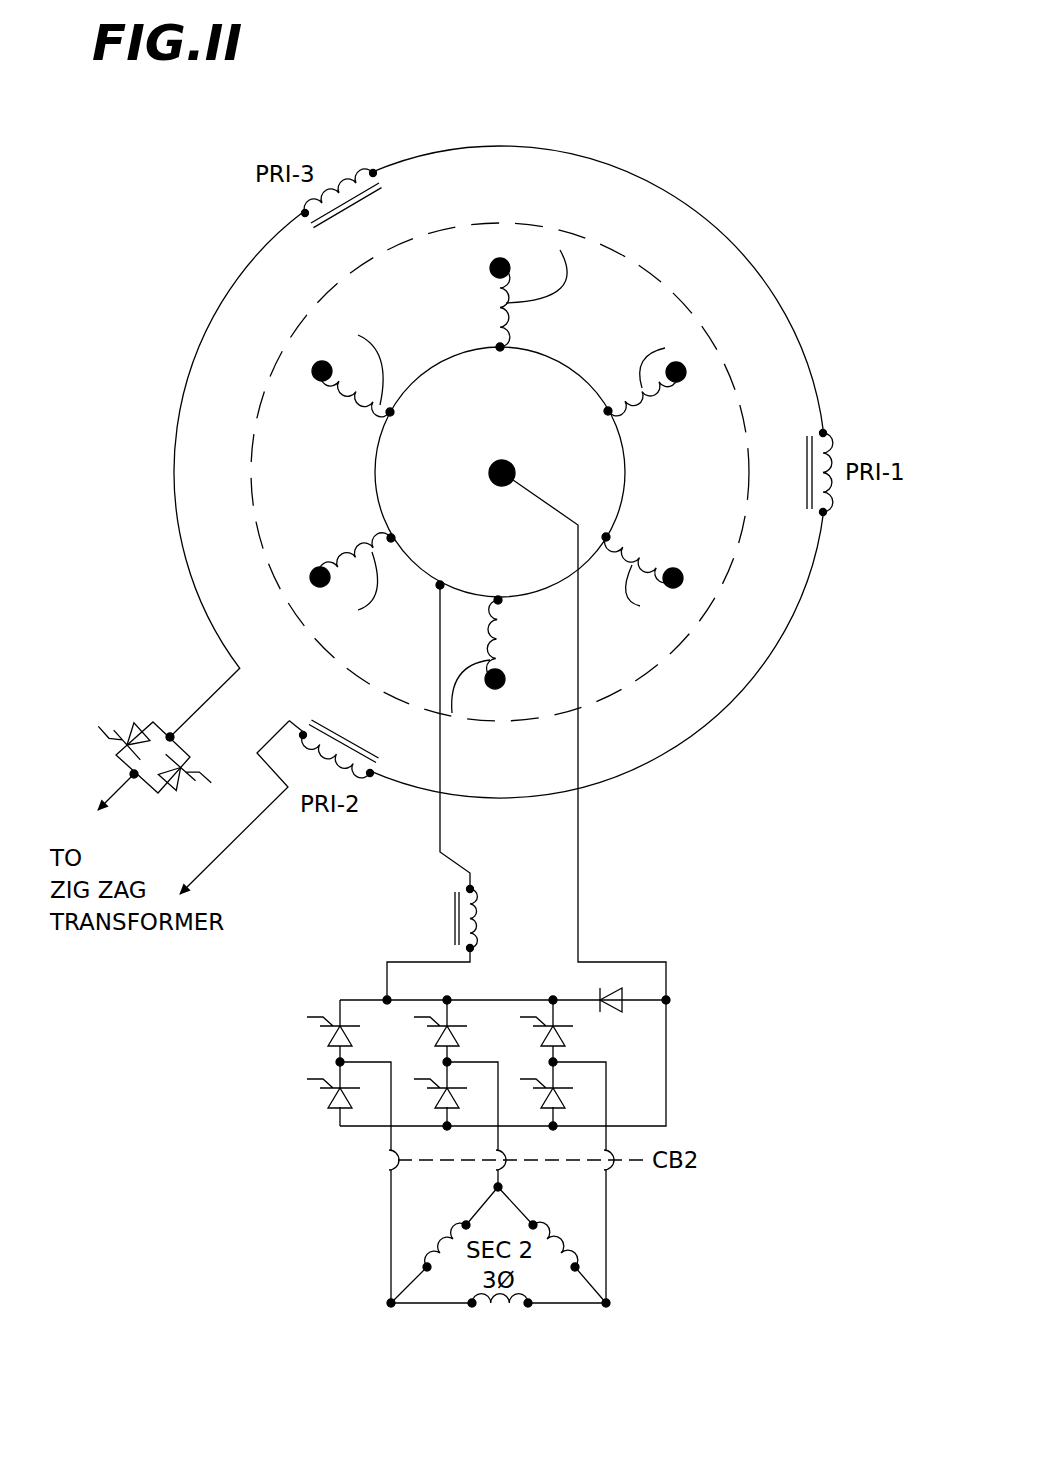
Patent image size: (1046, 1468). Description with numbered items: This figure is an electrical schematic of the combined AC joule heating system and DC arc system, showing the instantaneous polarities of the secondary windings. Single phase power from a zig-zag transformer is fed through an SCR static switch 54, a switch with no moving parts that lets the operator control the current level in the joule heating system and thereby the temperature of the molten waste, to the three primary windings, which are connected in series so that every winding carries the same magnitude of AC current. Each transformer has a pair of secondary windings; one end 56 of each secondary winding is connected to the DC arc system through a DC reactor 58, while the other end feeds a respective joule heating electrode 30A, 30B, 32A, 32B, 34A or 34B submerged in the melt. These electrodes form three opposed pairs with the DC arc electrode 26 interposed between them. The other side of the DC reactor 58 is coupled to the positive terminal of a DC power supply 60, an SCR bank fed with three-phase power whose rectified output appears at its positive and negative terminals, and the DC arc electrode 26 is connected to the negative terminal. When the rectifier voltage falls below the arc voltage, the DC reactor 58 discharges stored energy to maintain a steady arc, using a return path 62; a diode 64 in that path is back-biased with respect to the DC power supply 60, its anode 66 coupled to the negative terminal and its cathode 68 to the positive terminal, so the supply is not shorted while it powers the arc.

The DC arc electrode 26 is at (490, 472).
The AC joule heating electrode 30A is at (683, 576).
The AC joule heating electrode 30B is at (317, 380).
The AC joule heating electrode 32A is at (490, 274).
The AC joule heating electrode 32B is at (507, 680).
The AC joule heating electrode 34A is at (316, 574).
The AC joule heating electrode 34B is at (686, 378).
The SCR static switch 54 is at (104, 698).
The one end of each secondary winding 56 is at (500, 350).
The DC reactor 58 is at (446, 923).
The DC power supply 60 is at (554, 1032).
The return path 62 is at (486, 1000).
The diode 64 is at (612, 1012).
The anode 66 is at (640, 1003).
The cathode 68 is at (574, 996).